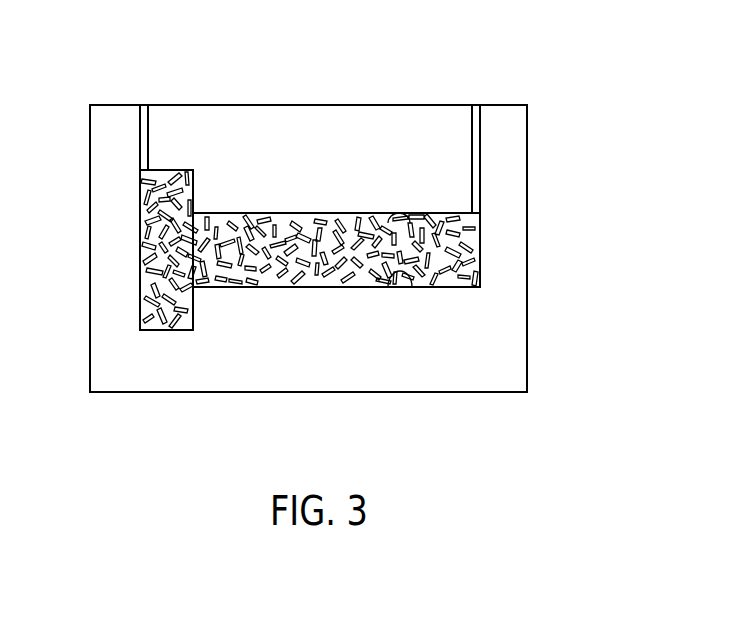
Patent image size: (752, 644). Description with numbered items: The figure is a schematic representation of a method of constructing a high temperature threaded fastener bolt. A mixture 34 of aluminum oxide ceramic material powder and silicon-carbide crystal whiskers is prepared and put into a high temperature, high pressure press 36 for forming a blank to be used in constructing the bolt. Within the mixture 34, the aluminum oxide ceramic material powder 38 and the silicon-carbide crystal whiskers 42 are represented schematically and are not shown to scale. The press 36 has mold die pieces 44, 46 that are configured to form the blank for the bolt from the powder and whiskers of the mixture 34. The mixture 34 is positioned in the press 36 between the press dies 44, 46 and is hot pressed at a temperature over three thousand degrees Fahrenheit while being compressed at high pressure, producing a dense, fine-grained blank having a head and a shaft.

The mixture 34 is at (284, 222).
The high temperature press 36 is at (548, 233).
The aluminum oxide ceramic material powder 38 is at (246, 232).
The silicon-carbide crystal whiskers 42 is at (180, 269).
The mold die piece 44 is at (408, 216).
The mold die piece 46 is at (410, 287).